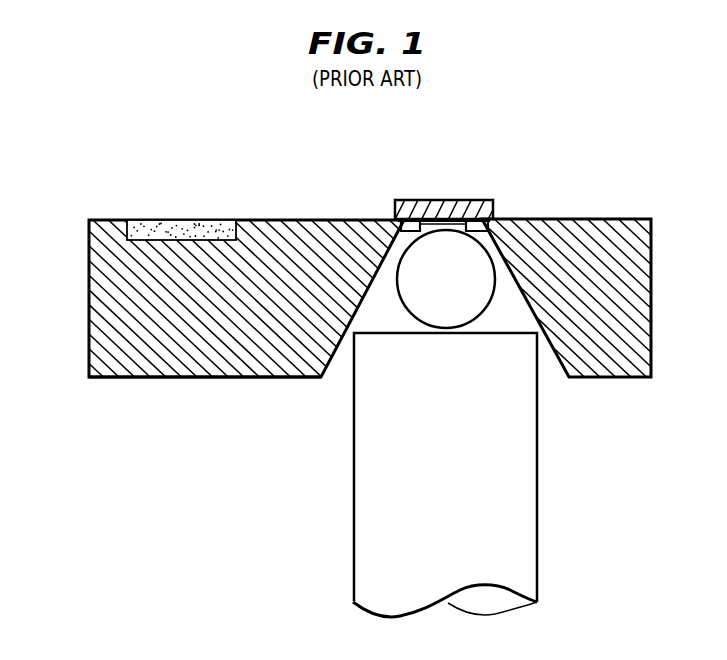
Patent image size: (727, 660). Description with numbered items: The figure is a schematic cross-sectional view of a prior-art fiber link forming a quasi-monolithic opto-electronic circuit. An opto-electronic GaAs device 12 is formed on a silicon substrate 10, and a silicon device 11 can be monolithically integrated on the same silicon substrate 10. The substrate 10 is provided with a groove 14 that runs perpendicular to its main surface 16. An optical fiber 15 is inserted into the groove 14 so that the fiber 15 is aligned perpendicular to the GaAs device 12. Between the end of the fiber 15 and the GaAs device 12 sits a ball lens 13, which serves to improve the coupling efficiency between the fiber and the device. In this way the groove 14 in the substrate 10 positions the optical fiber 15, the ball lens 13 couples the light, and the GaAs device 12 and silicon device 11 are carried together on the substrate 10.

The silicon substrate 10 is at (107, 299).
The silicon device 11 is at (177, 219).
The opto-electronic GaAs device 12 is at (437, 199).
The ball lens 13 is at (459, 293).
The groove 14 is at (341, 378).
The optical fiber 15 is at (510, 468).
The main surface 16 is at (205, 378).